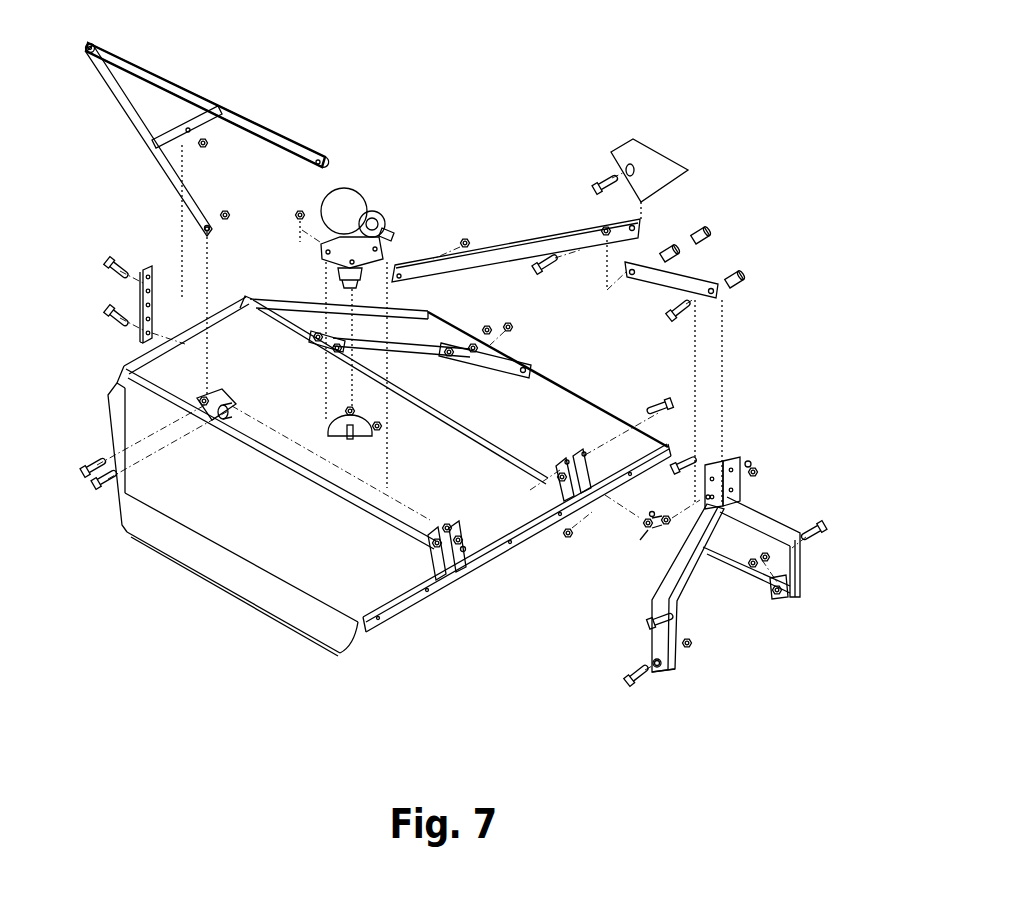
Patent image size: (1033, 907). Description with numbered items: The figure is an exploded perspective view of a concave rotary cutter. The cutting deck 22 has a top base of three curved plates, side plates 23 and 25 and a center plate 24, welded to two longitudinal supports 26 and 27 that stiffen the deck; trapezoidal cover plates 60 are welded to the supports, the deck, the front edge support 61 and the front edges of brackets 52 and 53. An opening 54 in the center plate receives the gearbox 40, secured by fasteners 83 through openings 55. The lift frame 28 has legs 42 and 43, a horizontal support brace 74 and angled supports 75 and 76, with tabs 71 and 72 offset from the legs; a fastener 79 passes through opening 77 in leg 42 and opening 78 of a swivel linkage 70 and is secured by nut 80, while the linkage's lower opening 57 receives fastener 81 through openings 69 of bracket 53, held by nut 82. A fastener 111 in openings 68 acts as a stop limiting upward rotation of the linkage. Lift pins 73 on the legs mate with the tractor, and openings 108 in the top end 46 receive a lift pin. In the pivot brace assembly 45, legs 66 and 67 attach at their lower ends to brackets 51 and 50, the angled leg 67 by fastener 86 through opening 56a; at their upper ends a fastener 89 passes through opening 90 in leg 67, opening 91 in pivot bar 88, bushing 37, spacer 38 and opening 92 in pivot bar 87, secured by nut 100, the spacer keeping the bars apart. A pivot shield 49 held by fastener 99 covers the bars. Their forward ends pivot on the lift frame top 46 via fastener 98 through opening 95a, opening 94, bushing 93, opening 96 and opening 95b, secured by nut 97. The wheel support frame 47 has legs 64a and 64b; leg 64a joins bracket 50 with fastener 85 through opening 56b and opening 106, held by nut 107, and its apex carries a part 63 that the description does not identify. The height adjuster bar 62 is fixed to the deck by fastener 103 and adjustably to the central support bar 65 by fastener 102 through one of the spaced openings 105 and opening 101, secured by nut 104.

The cutting deck 22 is at (214, 526).
The left side plate 23 is at (501, 418).
The center plate 24 is at (244, 363).
The right side plate 25 is at (173, 481).
The right longitudinal support 26 is at (350, 511).
The left longitudinal support 27 is at (467, 428).
The lift frame 28 is at (745, 503).
The bushing 37 is at (668, 245).
The spacer 38 is at (704, 228).
The gearbox 40 is at (357, 190).
The leg 42 is at (656, 667).
The leg 43 is at (802, 591).
The pivot brace assembly 45 is at (580, 234).
The top end of lift frame 46 is at (706, 468).
The wheel support frame 47 is at (132, 57).
The pivot shield 49 is at (660, 147).
The pivot brace bracket 50 is at (213, 396).
The bracket 51 is at (328, 351).
The bracket 52 is at (430, 555).
The bracket 53 is at (553, 493).
The opening 54 is at (343, 430).
The openings 55 is at (330, 428).
The opening 56a is at (221, 419).
The opening 56b is at (203, 396).
The opening 57 is at (645, 523).
The cover plates 60 is at (422, 590).
The front edge support 61 is at (420, 613).
The height adjuster bar 62 is at (146, 263).
The hitch pin hole 63 is at (90, 43).
The leg 64a is at (128, 128).
The leg 64b is at (251, 113).
The central support bar 65 is at (198, 124).
The leg 66 is at (420, 352).
The angled leg 67 is at (523, 240).
The openings 68 is at (565, 459).
The openings 69 is at (558, 476).
The swivel linkage 70 is at (460, 536).
The tab 71 is at (779, 598).
The tab 72 is at (672, 663).
The lift pins 73 is at (832, 525).
The support brace 74 is at (703, 555).
The angled support 75 is at (690, 570).
The angled support 76 is at (750, 548).
The opening 77 is at (654, 663).
The opening 78 is at (464, 552).
The fastener 79 is at (622, 689).
The nut 80 is at (690, 649).
The fastener 81 is at (434, 540).
The nut 82 is at (564, 539).
The fasteners 83 is at (379, 427).
The fastener 85 is at (81, 470).
The fastener 86 is at (93, 488).
The pivot bar 87 is at (502, 352).
The pivot bar 88 is at (692, 272).
The fastener 89 is at (543, 276).
The opening 90 is at (604, 236).
The opening 91 is at (630, 276).
The opening 92 is at (450, 358).
The bushing 93 is at (743, 286).
The opening 94 is at (711, 295).
The opening 95a is at (705, 498).
The opening 95b is at (740, 480).
The opening 96 is at (527, 369).
The nut 97 is at (750, 463).
The fastener 98 is at (663, 324).
The fastener 99 is at (592, 180).
The nut 100 is at (486, 324).
The opening 101 is at (188, 128).
The fastener 102 is at (105, 258).
The fastener 103 is at (105, 307).
The nut 104 is at (207, 148).
The openings 105 is at (153, 312).
The opening 106 is at (212, 229).
The nut 107 is at (229, 213).
The openings 108 is at (728, 460).
The fastener 111 is at (447, 523).